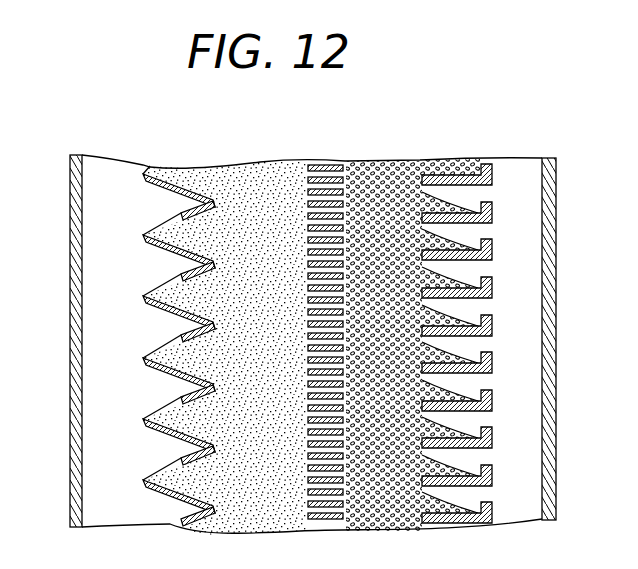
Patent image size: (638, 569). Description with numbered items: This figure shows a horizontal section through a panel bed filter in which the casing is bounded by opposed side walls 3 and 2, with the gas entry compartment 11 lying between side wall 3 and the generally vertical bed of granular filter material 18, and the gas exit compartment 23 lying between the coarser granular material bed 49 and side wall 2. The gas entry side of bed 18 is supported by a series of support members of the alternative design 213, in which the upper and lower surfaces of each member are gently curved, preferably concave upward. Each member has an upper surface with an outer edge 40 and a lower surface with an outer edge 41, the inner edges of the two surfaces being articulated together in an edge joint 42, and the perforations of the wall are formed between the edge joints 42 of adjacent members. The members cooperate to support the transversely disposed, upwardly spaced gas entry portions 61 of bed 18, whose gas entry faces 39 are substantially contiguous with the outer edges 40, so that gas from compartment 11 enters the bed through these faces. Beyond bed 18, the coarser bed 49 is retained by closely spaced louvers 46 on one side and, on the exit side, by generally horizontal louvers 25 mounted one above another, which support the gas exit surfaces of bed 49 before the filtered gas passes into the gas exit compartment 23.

The side wall 2 is at (557, 268).
The side wall 3 is at (72, 292).
The gas entry compartment 11 is at (122, 393).
The bed of granular filter material 18 is at (257, 436).
The support member design 213 is at (167, 253).
The outer edge of upper surface 40 is at (142, 296).
The outer edge of lower surface 41 is at (172, 328).
The inner edge joint 42 is at (215, 320).
The gas entry face 39 is at (160, 405).
The gas entry portion 61 is at (157, 477).
The granular material bed 49 is at (358, 291).
The louvers 46 is at (344, 446).
The louvers or slats 25 is at (492, 218).
The gas exit compartment 23 is at (530, 340).